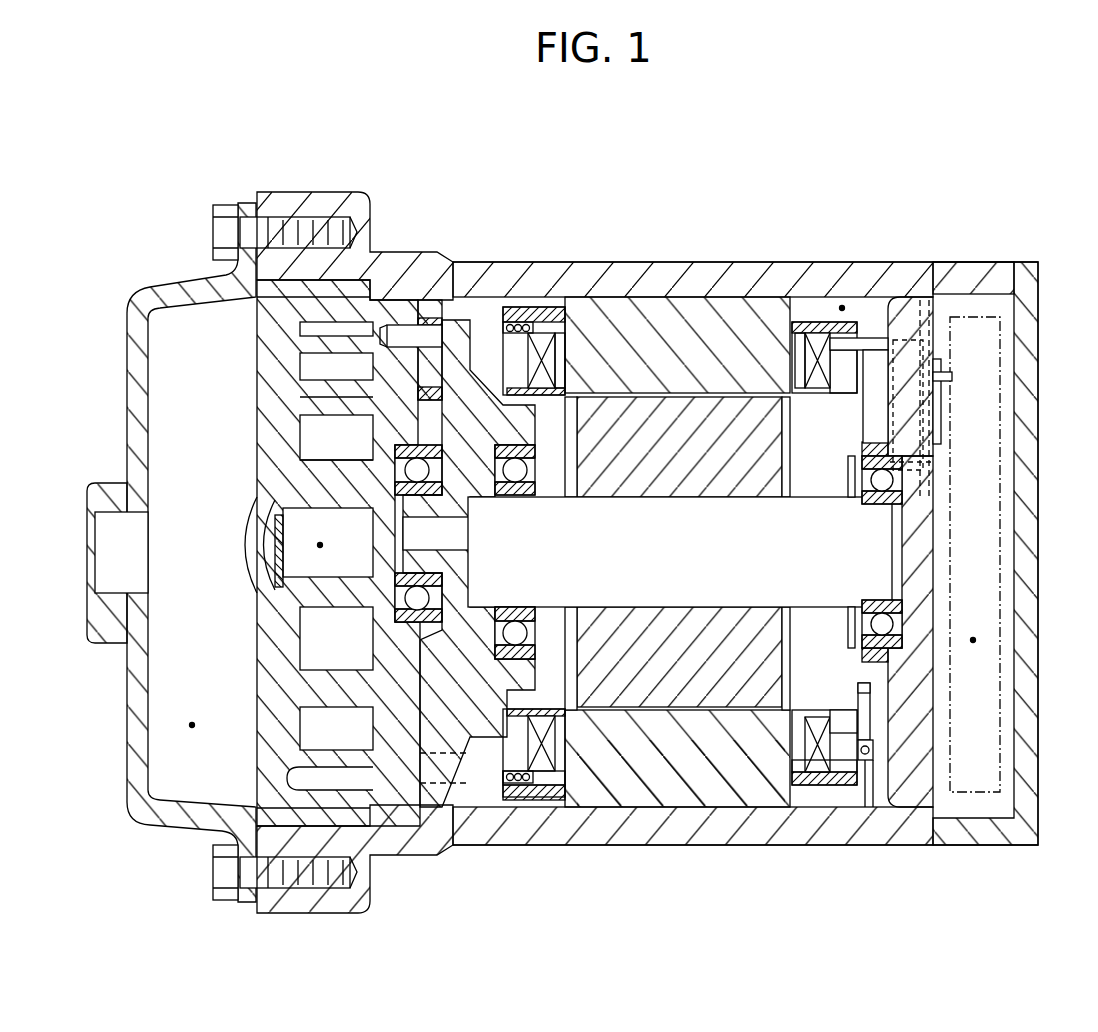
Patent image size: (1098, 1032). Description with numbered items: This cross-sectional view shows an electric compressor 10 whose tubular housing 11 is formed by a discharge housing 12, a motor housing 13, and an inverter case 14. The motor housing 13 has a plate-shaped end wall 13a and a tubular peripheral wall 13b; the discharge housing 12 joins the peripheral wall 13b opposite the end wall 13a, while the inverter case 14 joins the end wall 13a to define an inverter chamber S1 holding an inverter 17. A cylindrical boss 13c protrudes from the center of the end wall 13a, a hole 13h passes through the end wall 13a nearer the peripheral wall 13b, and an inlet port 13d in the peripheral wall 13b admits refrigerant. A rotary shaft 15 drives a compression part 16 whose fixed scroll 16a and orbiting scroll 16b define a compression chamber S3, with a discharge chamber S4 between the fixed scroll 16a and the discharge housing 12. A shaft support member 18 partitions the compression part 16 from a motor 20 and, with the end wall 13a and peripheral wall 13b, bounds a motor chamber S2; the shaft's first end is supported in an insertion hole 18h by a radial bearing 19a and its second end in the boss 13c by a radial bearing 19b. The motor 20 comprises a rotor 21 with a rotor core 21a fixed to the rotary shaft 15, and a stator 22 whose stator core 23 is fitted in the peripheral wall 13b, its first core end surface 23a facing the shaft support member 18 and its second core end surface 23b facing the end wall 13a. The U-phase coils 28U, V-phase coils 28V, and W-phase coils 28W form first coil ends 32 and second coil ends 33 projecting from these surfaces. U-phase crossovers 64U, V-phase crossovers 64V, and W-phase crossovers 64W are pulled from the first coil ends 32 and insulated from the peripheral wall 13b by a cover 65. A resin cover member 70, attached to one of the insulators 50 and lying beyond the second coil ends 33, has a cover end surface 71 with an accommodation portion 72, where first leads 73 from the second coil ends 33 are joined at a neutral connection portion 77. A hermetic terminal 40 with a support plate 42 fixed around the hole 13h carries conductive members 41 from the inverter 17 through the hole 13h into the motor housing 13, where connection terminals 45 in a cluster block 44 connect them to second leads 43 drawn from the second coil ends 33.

The electric compressor 10 is at (107, 216).
The housing 11 is at (405, 250).
The discharge housing 12 is at (174, 287).
The motor housing 13 is at (717, 535).
The end wall 13a is at (925, 707).
The peripheral wall 13b is at (690, 272).
The boss 13c is at (865, 655).
The inlet port 13d is at (853, 272).
The hole 13h is at (926, 300).
The inverter case 14 is at (1033, 603).
The rotary shaft 15 is at (546, 612).
The compression part 16 is at (322, 512).
The fixed scroll 16a is at (268, 388).
The orbiting scroll 16b is at (303, 487).
The inverter 17 is at (1000, 545).
The shaft support member 18 is at (469, 606).
The insertion hole 18h is at (483, 617).
The radial bearing 19a is at (516, 500).
The radial bearing 19b is at (868, 512).
The motor 20 is at (677, 561).
The rotor 21 is at (720, 715).
The rotor core 21a is at (603, 700).
The stator 22 is at (655, 802).
The stator core 23 is at (695, 795).
The first core end surface 23a is at (542, 778).
The second core end surface 23b is at (797, 778).
The U-phase coils 28U is at (548, 330).
The V-phase coils 28V is at (817, 360).
The W-phase coils 28W is at (541, 743).
The first coil ends 32 is at (550, 360).
The second coil ends 33 is at (812, 366).
The hermetic terminal 40 is at (940, 352).
The conductive members 41 is at (941, 347).
The support plate 42 is at (942, 430).
The second leads 43 is at (845, 393).
The cluster block 44 is at (935, 463).
The connection terminals 45 is at (940, 400).
The insulators 50 is at (573, 330).
The U-phase crossovers 64U is at (522, 790).
The V-phase crossovers 64V is at (512, 322).
The W-phase crossovers 64W is at (516, 782).
The cover 65 is at (522, 318).
The cover member 70 is at (840, 712).
The cover end surface 71 is at (866, 762).
The accommodation portion 72 is at (893, 805).
The first leads 73 is at (867, 707).
The neutral connection portion 77 is at (875, 748).
The inverter chamber S1 is at (973, 640).
The motor chamber S2 is at (842, 308).
The compression chamber S3 is at (320, 545).
The discharge chamber S4 is at (192, 725).